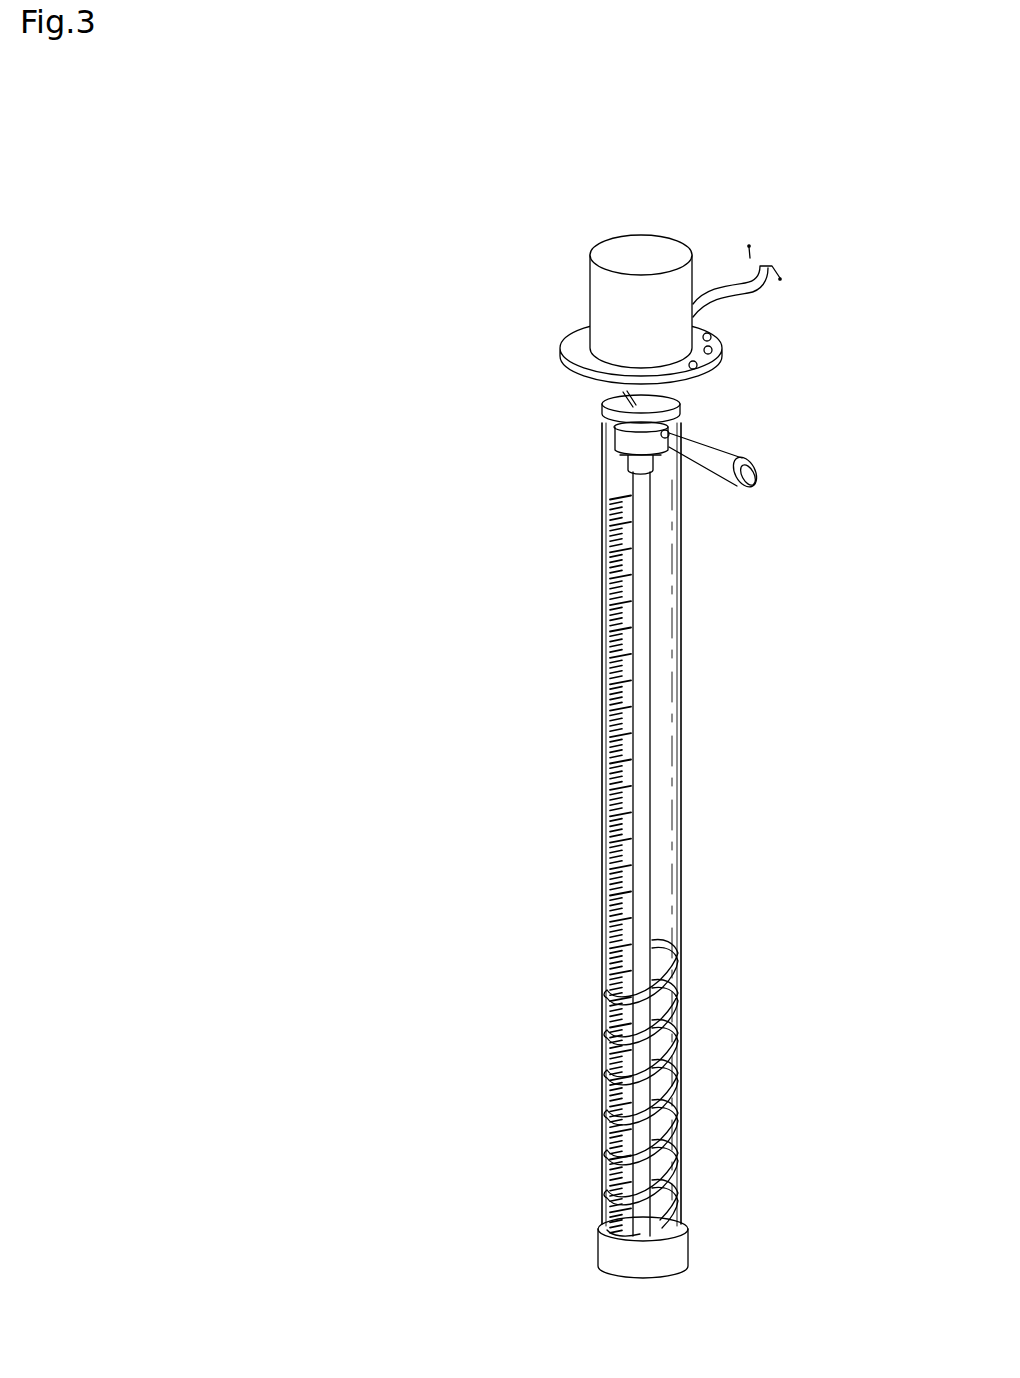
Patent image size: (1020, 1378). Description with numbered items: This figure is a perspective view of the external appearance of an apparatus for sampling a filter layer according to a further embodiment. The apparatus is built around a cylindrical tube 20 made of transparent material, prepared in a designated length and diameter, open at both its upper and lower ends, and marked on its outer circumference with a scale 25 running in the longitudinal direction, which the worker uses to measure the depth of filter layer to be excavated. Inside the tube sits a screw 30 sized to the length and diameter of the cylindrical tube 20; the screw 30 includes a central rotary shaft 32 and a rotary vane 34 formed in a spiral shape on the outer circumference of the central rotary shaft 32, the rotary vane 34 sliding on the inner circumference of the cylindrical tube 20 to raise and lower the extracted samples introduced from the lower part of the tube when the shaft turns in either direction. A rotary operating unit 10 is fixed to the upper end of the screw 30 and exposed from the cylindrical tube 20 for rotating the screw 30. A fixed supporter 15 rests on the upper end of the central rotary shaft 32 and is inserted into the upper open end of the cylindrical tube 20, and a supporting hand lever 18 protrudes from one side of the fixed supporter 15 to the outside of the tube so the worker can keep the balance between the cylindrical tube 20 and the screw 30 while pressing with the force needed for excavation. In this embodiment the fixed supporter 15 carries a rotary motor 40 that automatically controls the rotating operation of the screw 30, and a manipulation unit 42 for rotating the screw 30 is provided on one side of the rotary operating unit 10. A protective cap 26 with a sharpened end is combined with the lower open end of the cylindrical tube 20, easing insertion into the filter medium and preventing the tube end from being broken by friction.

The rotary operating unit 10 is at (671, 715).
The rotary motor 40 is at (645, 250).
The manipulation unit 42 is at (723, 350).
The fixed supporter 15 is at (607, 392).
The supporting hand lever 18 is at (737, 455).
The cylindrical tube 20 is at (603, 478).
The scale 25 is at (613, 693).
The screw 30 is at (703, 829).
The central rotary shaft 32 is at (647, 883).
The rotary vane 34 is at (668, 985).
The protective cap 26 is at (688, 1230).